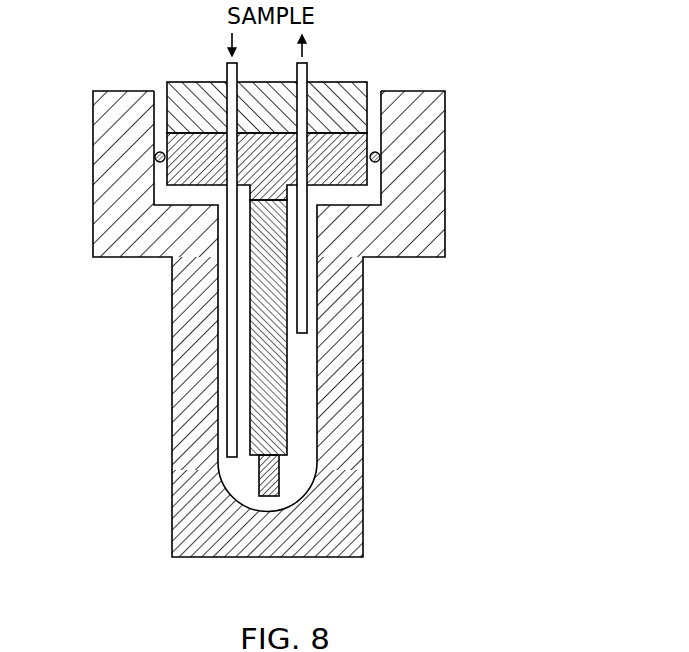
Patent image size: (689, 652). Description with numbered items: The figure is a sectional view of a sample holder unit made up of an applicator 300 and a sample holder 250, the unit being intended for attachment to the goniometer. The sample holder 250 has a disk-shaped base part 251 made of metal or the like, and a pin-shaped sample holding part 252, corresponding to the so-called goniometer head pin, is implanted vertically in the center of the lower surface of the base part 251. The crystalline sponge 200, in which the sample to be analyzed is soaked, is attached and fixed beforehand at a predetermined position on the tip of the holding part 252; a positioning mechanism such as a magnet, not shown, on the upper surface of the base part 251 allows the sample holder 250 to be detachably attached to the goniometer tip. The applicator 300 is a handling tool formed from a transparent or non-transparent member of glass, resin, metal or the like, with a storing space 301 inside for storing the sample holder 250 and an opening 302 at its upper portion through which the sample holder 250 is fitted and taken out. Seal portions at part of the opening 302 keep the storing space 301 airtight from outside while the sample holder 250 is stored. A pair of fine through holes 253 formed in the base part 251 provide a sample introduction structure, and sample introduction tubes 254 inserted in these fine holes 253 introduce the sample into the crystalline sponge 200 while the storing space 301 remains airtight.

The crystalline sponge 200 is at (279, 483).
The sample holder 250 is at (368, 111).
The base part 251 is at (333, 163).
The sample holding part 252 is at (277, 378).
The fine through hole 253 is at (375, 157).
The sample introduction tube 254 is at (232, 345).
The applicator 300 is at (365, 335).
The storing space 301 is at (306, 357).
The opening 302 is at (373, 128).